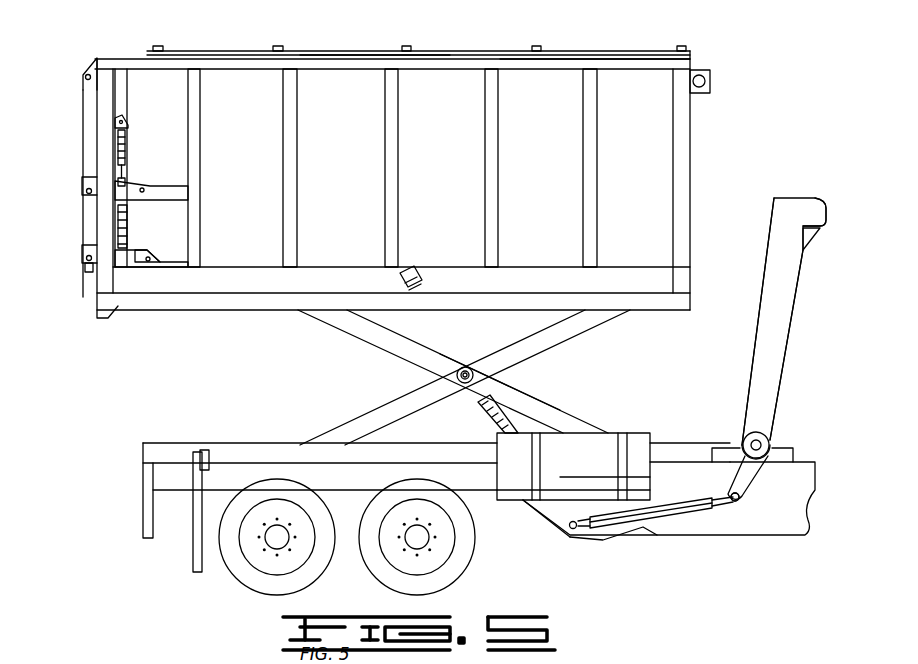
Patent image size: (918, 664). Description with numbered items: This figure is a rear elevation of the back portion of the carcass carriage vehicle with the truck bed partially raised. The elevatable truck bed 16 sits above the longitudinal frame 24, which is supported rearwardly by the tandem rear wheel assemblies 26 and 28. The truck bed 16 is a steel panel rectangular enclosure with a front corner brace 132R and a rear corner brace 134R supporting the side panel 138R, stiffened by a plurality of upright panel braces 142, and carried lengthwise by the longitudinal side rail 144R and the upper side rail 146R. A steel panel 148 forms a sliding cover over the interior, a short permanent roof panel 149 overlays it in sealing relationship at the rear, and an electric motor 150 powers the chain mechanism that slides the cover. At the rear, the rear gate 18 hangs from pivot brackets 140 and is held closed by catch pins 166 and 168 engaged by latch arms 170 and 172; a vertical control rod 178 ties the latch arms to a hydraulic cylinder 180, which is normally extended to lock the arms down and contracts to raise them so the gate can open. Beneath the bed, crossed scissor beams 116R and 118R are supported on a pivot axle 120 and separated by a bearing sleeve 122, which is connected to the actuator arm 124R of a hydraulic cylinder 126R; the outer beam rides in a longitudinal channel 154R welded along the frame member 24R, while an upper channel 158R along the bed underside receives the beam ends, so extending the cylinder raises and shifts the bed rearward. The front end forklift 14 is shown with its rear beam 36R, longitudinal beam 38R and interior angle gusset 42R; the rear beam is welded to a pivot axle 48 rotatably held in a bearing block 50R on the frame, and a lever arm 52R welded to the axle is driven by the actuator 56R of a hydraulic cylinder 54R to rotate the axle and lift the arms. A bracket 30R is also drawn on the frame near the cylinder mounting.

The front end forklift 14 is at (793, 198).
The elevatable truck bed 16 is at (447, 80).
The rear gate 18 is at (83, 155).
The longitudinal frame 24 is at (805, 488).
The longitudinal frame member 24R is at (333, 478).
The tandem rear wheel assembly 26 is at (372, 585).
The tandem rear wheel assembly 28 is at (240, 588).
The frame bracket 30R is at (552, 497).
The rear beam 36R is at (782, 300).
The longitudinal beam 38R is at (815, 200).
The interior angle gusset 42R is at (808, 233).
The pivot axle 48 is at (760, 443).
The bearing block 50R is at (780, 448).
The lever arm 52R is at (750, 482).
The hydraulic cylinder 54R is at (680, 530).
The actuator 56R is at (573, 528).
The scissor beam 116R is at (585, 430).
The scissor beam 118R is at (600, 318).
The pivot axle 120 is at (468, 368).
The bearing sleeve 122 is at (458, 372).
The actuator arm 124R is at (478, 400).
The hydraulic cylinder 126R is at (515, 405).
The front corner brace 132R is at (680, 140).
The rear corner brace 134R is at (102, 322).
The side panel 138R is at (555, 80).
The pivot bracket 140 is at (90, 70).
The upright panel brace 142 is at (202, 122).
The longitudinal side rail 144R is at (278, 298).
The upper side rail 146R is at (362, 60).
The steel panel 148 is at (337, 52).
The permanent roof panel 149 is at (138, 62).
The electric motor 150 is at (705, 70).
The longitudinal channel 154R is at (233, 455).
The longitudinal channel 158R is at (205, 308).
The catch pin 166 is at (88, 193).
The catch pin 168 is at (87, 272).
The latch arm 170 is at (80, 185).
The latch arm 172 is at (82, 252).
The vertical control rod 178 is at (122, 225).
The hydraulic cylinder 180 is at (120, 140).